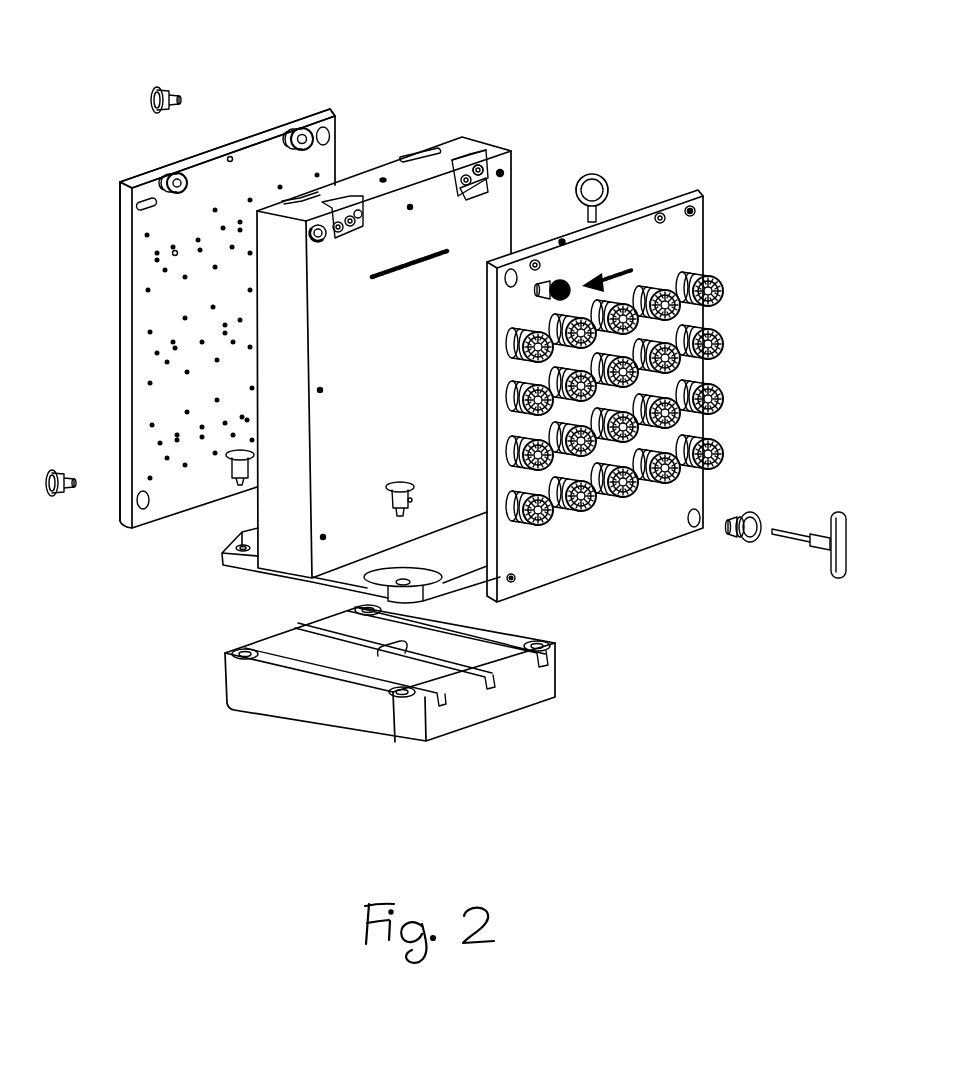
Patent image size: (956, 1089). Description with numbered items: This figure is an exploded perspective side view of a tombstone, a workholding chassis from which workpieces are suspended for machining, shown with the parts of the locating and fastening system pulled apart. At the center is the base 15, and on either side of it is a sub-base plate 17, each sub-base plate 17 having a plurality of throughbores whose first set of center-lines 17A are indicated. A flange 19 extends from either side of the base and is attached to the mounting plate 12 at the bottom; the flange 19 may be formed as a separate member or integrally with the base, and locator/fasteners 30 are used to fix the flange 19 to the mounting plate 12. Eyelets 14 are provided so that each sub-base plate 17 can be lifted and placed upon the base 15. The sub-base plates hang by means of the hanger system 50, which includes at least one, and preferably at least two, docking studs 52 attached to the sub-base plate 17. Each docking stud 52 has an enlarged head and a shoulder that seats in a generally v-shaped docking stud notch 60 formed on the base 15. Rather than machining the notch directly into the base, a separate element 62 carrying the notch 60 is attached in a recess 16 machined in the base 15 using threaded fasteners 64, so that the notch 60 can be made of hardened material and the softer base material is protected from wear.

The mounting plate 12 is at (335, 726).
The eyelet 14 is at (594, 173).
The base 15 is at (420, 366).
The recess 16 is at (475, 150).
The sub-base plate 17 is at (121, 259).
The center-lines of throughbores 17A is at (322, 126).
The flange 19 is at (243, 575).
The locator/fastener 30 is at (736, 470).
The hanger system 50 is at (288, 98).
The docking stud 52 is at (290, 142).
The docking stud notch 60 is at (486, 130).
The separate element 62 is at (488, 160).
The threaded fastener 64 is at (484, 192).